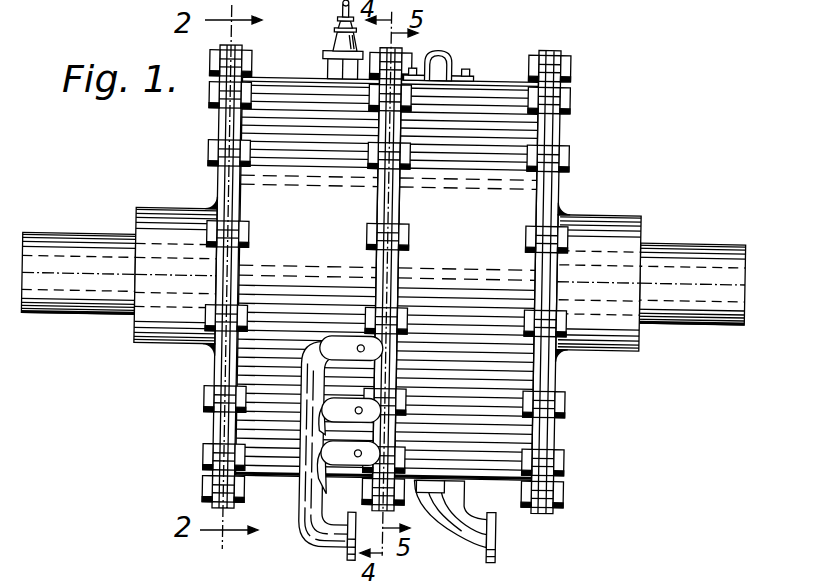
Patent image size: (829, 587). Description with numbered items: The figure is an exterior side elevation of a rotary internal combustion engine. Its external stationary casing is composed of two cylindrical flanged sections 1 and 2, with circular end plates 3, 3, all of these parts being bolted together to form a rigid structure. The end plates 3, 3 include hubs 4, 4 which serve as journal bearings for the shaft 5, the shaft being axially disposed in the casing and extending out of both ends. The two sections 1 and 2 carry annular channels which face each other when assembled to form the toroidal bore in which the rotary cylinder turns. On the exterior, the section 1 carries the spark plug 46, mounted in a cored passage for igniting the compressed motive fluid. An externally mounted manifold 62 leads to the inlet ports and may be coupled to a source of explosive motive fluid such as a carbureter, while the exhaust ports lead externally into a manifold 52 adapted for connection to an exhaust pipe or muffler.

The cylindrical flanged casing section 1 is at (296, 84).
The cylindrical flanged casing section 2 is at (490, 88).
The circular end plate 3 is at (226, 128).
The hub 4 is at (166, 212).
The shaft 5 is at (64, 240).
The spark plug 46 is at (343, 19).
The inlet manifold 62 is at (447, 56).
The exhaust manifold 52 is at (478, 547).